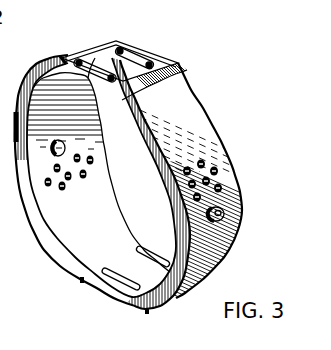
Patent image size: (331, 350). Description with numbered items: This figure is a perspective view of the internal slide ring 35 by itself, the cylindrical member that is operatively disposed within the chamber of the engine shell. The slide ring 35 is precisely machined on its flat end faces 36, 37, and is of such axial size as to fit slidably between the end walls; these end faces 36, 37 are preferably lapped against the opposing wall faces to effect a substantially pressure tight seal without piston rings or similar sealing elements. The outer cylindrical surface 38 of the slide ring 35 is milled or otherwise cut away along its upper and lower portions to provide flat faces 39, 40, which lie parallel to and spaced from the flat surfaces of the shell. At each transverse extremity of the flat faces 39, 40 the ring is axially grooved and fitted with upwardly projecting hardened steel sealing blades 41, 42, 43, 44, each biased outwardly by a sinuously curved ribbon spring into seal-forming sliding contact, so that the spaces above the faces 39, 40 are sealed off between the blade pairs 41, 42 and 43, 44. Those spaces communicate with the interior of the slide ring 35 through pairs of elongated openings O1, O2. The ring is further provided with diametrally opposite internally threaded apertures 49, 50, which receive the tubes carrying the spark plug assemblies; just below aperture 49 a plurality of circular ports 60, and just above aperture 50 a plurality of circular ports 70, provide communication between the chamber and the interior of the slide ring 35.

The slide ring 35 is at (207, 141).
The flat end face 36 is at (70, 266).
The flat end face 37 is at (236, 196).
The outer cylindrical surface 38 is at (176, 115).
The flat face 39 is at (170, 59).
The flat face 40 is at (130, 297).
The sealing blade 41 is at (104, 46).
The sealing blade 42 is at (179, 66).
The sealing blade 43 is at (82, 284).
The sealing blade 44 is at (147, 314).
The internally threaded aperture 49 is at (50, 153).
The internally threaded aperture 50 is at (224, 214).
The circular ports 60 is at (63, 190).
The circular ports 70 is at (226, 178).
The elongated openings O1 is at (84, 22).
The elongated openings O2 is at (135, 200).